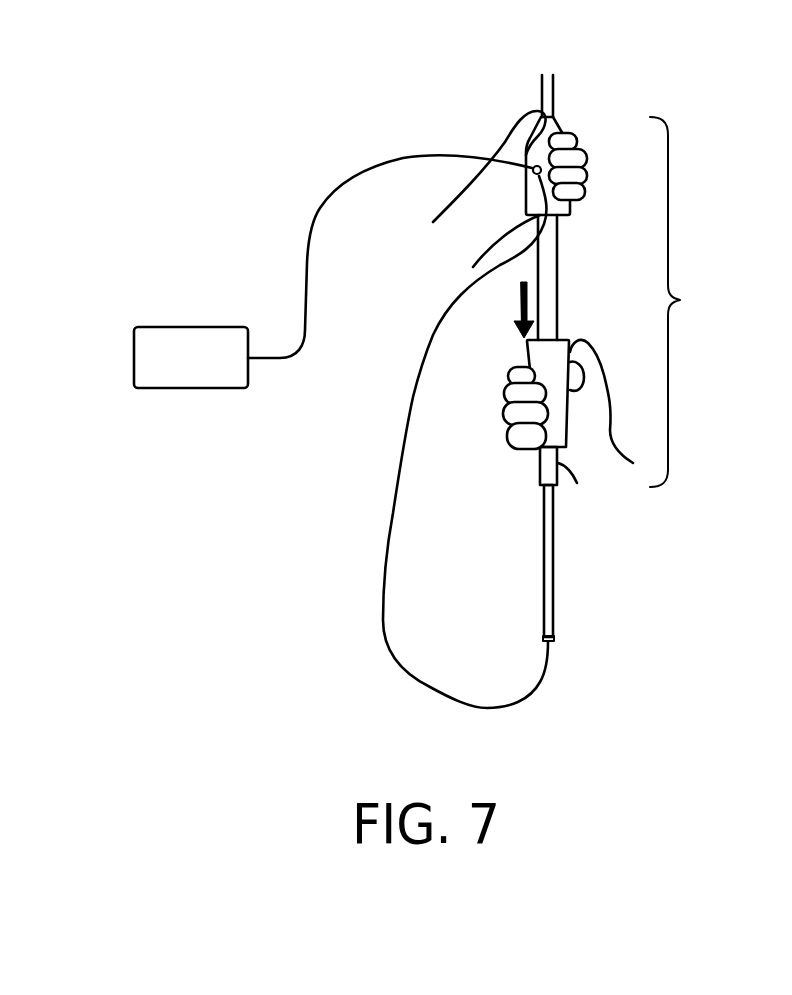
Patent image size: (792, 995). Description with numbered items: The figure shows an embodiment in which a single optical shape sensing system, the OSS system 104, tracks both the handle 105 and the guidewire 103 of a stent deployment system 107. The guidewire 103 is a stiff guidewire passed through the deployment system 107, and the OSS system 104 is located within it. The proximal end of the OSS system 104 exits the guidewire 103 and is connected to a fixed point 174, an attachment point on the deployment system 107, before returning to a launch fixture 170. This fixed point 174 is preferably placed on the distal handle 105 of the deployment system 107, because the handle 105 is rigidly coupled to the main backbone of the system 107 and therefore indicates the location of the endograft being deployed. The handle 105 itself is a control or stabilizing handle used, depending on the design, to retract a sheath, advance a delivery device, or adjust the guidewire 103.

The guidewire 103 is at (553, 562).
The OSS system 104 is at (383, 593).
The handle 105 is at (563, 127).
The deployment system 107 is at (636, 302).
The launch fixture 170 is at (192, 327).
The fixed point 174 is at (535, 154).